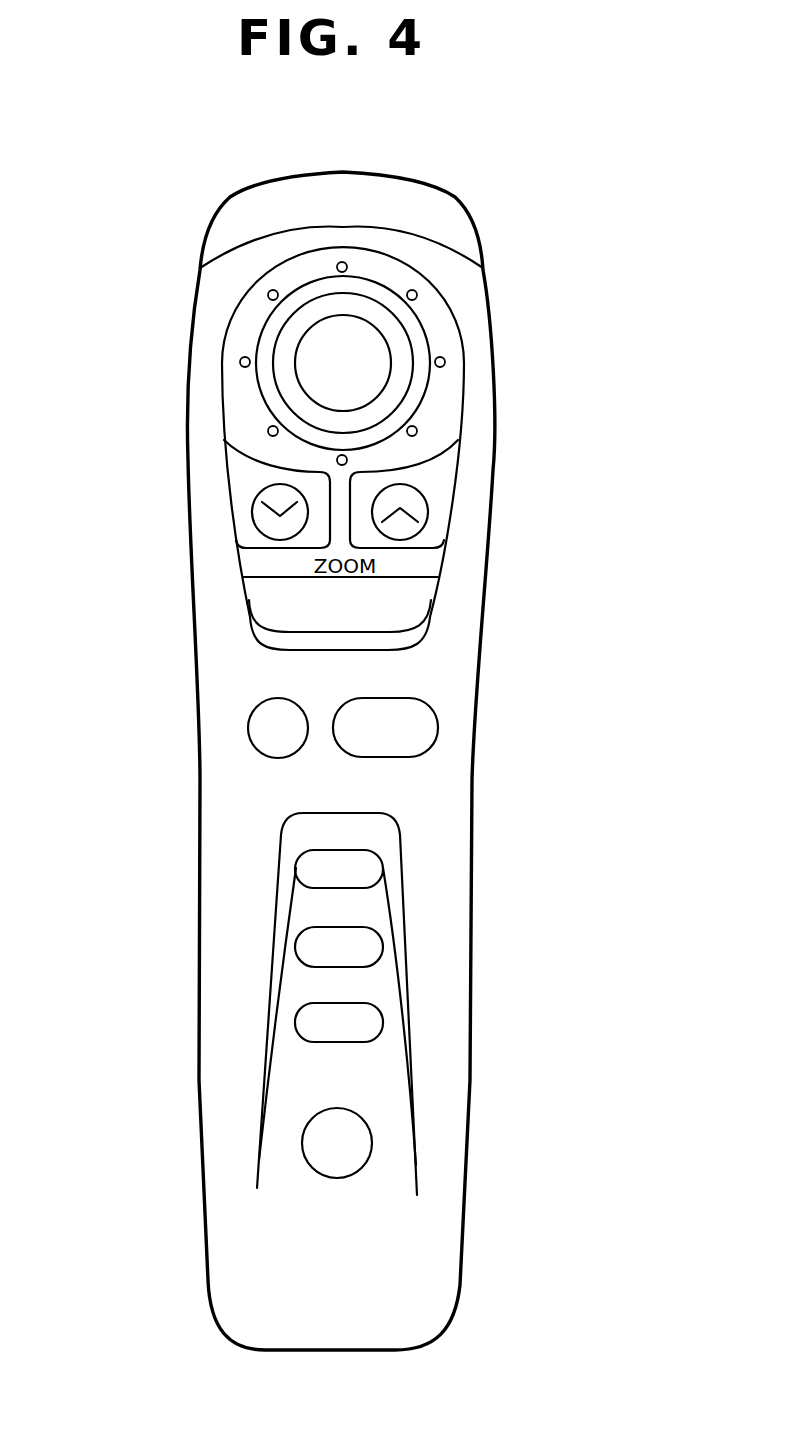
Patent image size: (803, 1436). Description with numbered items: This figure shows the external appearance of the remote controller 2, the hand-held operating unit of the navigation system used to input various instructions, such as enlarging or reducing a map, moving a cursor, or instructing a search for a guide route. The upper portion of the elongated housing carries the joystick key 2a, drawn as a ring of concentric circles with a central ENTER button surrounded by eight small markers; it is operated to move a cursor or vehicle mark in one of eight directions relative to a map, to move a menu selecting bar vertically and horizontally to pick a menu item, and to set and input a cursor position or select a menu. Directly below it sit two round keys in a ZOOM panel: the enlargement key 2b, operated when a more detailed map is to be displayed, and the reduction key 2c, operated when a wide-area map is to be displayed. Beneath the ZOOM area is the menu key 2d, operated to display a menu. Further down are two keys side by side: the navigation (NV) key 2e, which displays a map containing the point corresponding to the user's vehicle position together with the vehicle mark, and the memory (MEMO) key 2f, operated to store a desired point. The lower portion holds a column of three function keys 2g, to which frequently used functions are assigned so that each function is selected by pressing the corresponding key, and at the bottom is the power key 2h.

The remote controller 2 is at (542, 280).
The joystick key 2a is at (443, 388).
The enlargement key 2b is at (253, 508).
The reduction key 2c is at (428, 514).
The menu key 2d is at (260, 607).
The navigation (NV) key 2e is at (247, 730).
The memory (MEMO) key 2f is at (438, 722).
The function keys 2g is at (297, 866).
The power key 2h is at (373, 1142).